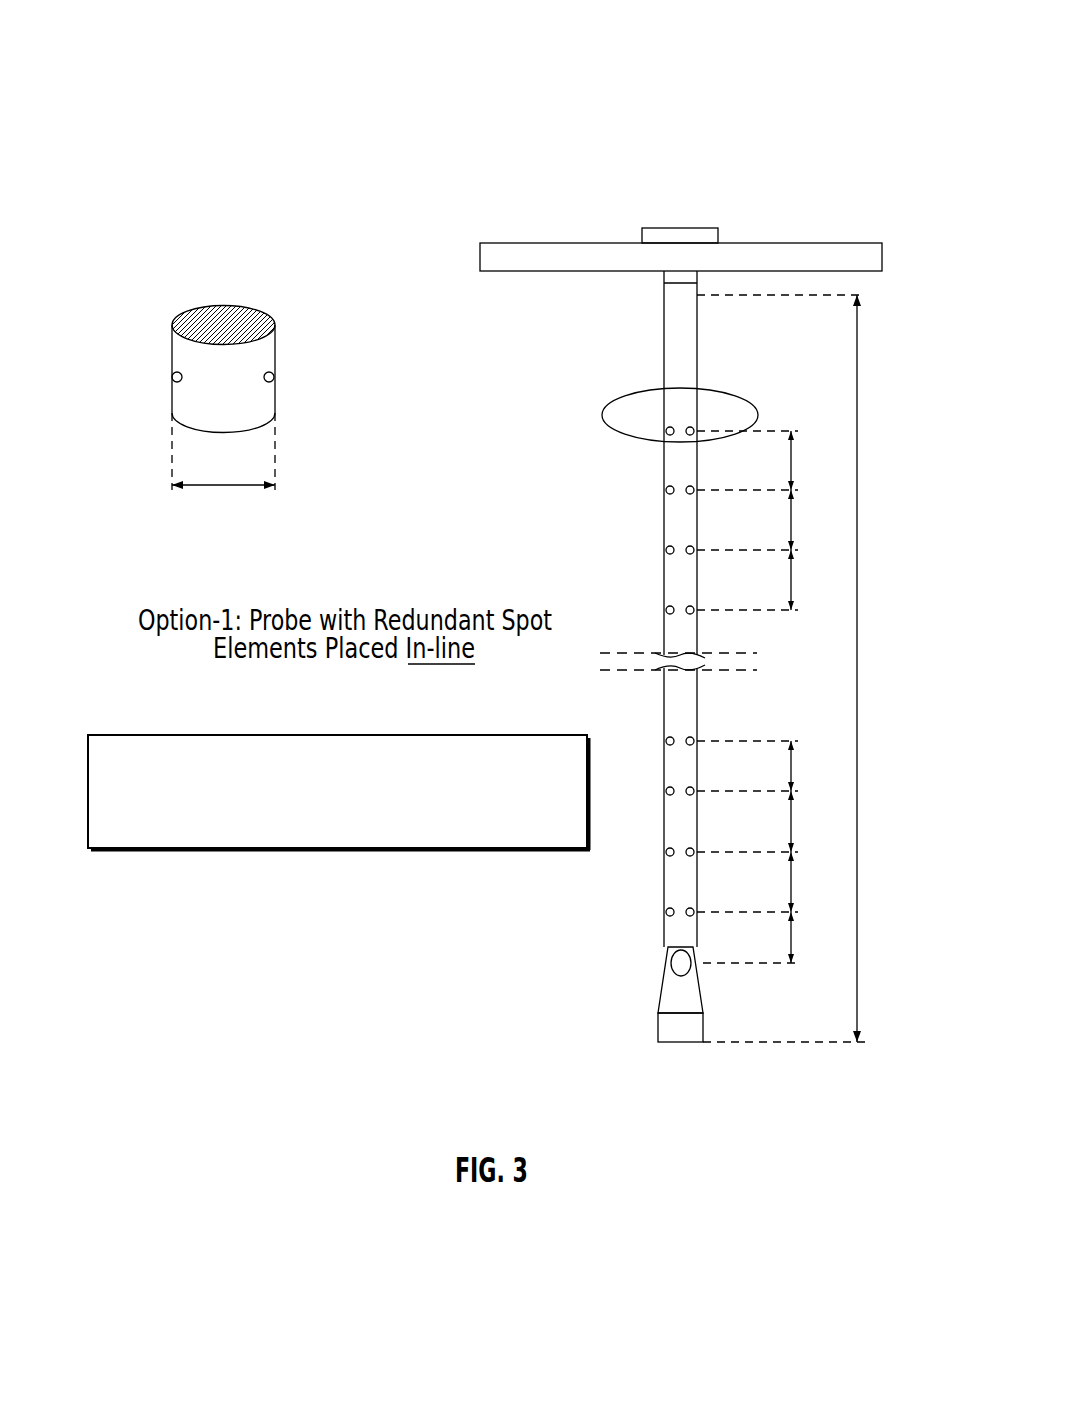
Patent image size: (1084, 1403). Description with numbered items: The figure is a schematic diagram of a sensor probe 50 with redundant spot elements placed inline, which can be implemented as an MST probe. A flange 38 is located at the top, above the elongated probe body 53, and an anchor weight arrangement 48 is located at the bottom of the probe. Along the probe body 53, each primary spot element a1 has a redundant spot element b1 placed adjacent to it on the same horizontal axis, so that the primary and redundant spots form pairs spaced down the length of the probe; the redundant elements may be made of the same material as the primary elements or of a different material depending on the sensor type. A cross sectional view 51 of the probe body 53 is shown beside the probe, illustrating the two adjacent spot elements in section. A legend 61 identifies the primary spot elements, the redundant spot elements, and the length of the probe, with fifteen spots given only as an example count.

The sensor probe 50 is at (197, 61).
The flange 38 is at (878, 234).
The probe body 53 is at (652, 328).
The cross sectional view 51 is at (262, 296).
The legend 61 is at (158, 733).
The anchor weight arrangement 48 is at (646, 988).
The primary spot element a1 is at (707, 417).
The redundant spot element b1 is at (680, 415).